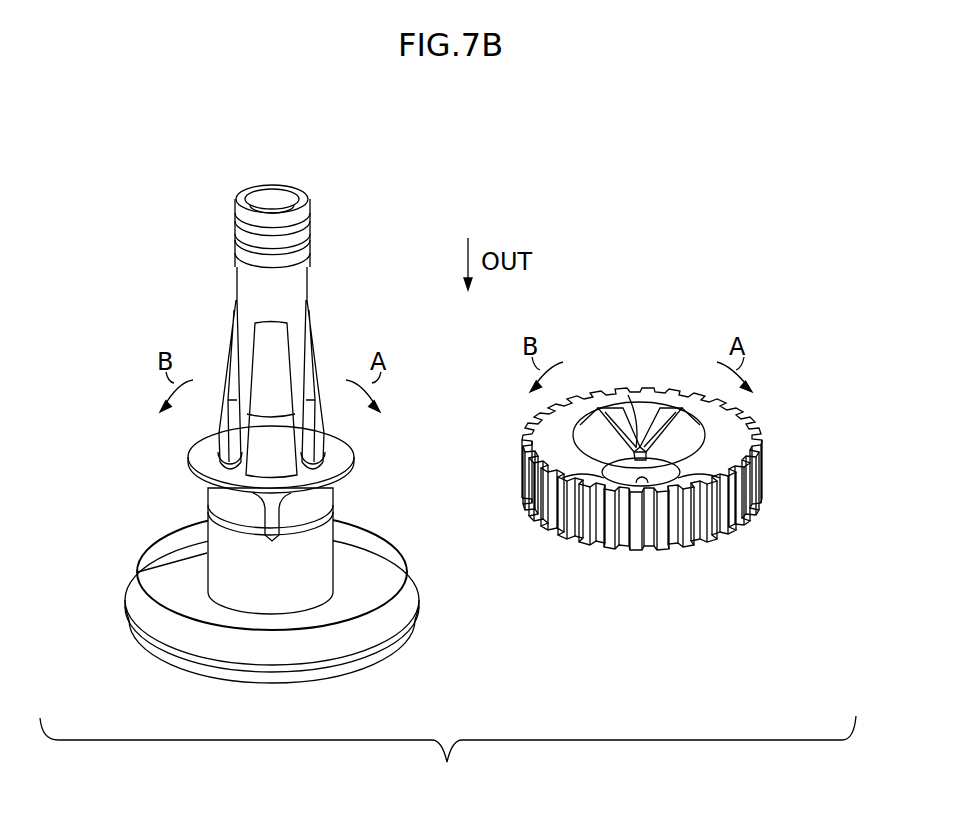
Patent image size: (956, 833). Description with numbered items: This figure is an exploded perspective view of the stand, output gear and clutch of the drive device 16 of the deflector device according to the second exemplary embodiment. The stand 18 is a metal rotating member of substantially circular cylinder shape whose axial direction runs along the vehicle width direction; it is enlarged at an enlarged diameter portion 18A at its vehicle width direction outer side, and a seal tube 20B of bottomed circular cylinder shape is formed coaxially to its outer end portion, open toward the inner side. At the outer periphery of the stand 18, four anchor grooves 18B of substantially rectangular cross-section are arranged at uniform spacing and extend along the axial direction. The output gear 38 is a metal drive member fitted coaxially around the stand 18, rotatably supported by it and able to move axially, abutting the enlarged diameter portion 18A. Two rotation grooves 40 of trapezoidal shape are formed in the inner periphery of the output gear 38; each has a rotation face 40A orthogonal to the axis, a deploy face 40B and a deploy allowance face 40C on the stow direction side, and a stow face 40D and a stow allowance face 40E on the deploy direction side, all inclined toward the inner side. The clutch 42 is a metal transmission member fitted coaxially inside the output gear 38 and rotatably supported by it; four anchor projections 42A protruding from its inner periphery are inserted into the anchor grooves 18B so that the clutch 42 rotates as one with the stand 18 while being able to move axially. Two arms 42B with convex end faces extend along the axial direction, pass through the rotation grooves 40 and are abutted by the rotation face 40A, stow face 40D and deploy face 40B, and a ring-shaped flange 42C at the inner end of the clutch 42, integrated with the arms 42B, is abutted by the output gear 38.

The drive device 16 is at (607, 240).
The stand 18 is at (273, 331).
The enlarged diameter portion 18A is at (138, 572).
The anchor grooves 18B is at (226, 426).
The seal tube 20B is at (402, 551).
The output gear 38 is at (522, 450).
The rotation grooves 40 is at (641, 453).
The rotation face 40A is at (644, 440).
The deploy face 40B is at (628, 432).
The deploy allowance face 40C is at (616, 430).
The stow face 40D is at (650, 433).
The stow allowance face 40E is at (675, 428).
The clutch 42 is at (268, 520).
The anchor projections 42A is at (228, 452).
The arms 42B is at (279, 520).
The flange 42C is at (348, 477).